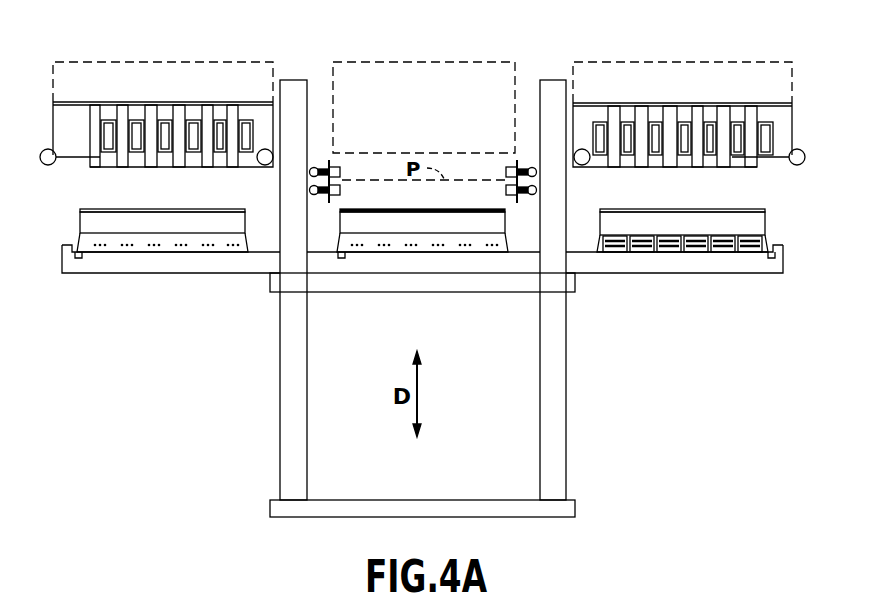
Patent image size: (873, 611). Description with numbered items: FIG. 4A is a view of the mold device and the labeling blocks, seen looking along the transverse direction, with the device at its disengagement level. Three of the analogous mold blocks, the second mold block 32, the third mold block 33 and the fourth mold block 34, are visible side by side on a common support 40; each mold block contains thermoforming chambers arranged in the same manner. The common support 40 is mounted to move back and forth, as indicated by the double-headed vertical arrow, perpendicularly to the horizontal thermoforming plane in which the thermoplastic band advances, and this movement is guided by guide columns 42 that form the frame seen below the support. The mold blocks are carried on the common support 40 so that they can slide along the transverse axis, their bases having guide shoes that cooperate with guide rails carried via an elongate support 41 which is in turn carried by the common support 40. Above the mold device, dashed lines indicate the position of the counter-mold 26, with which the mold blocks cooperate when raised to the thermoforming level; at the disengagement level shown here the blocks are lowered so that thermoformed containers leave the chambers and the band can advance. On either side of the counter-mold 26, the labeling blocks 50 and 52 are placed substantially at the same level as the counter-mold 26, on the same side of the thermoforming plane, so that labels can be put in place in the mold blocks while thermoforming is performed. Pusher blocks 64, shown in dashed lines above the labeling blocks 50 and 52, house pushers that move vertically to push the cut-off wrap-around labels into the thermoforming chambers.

The counter-mold 26 is at (420, 78).
The second mold block 32 is at (752, 225).
The third mold block 33 is at (395, 245).
The fourth mold block 34 is at (105, 237).
The common support 40 is at (478, 290).
The elongate support 41 is at (165, 263).
The guide columns 42 is at (558, 428).
The labeling block 50 is at (783, 115).
The labeling block 52 is at (68, 125).
The pusher blocks 64 is at (155, 78).